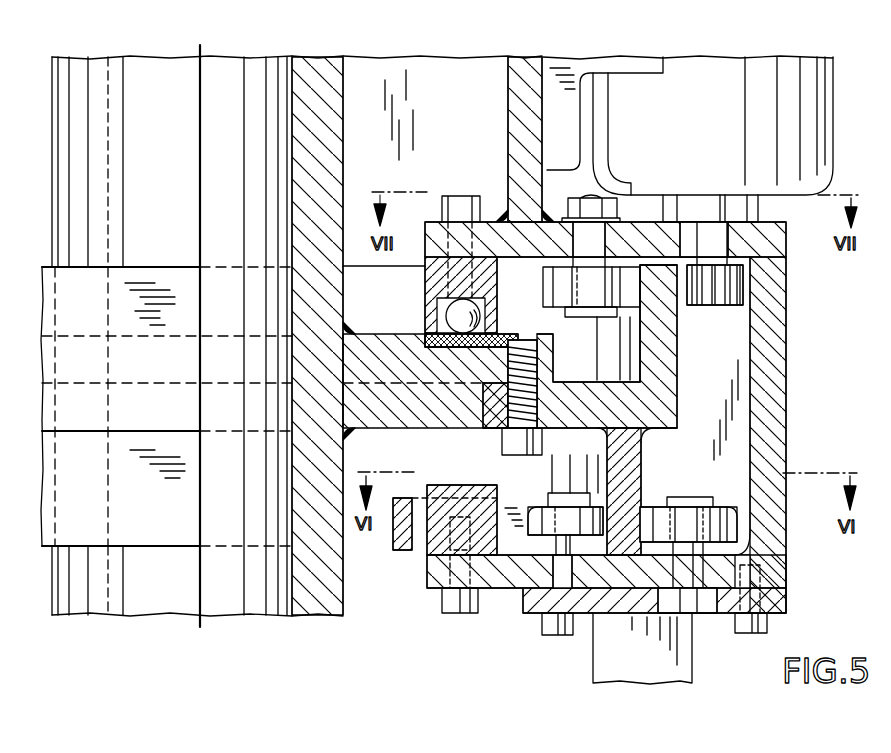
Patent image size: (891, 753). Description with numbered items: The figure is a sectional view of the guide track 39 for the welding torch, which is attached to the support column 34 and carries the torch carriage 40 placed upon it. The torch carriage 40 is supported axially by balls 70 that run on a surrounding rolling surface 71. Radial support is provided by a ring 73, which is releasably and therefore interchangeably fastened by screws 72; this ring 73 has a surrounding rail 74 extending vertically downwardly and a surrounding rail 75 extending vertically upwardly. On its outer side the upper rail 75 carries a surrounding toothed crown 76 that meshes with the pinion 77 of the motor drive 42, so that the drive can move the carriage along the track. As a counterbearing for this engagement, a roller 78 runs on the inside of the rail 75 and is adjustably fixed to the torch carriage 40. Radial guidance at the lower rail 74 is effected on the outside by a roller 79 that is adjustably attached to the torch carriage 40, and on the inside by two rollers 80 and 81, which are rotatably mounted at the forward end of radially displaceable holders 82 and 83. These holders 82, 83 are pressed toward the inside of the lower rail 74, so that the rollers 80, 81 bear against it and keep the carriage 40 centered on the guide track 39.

The support column 34 is at (294, 97).
The guide track 39 is at (370, 383).
The torch carriage 40 is at (768, 303).
The motor drive 42 is at (763, 75).
The balls 70 is at (450, 318).
The rolling surface 71 is at (503, 326).
The screws 72 is at (527, 418).
The ring 73 is at (620, 417).
The rail 74 is at (625, 522).
The rail 75 is at (652, 330).
The toothed crown 76 is at (678, 283).
The pinion 77 is at (733, 277).
The roller 78 is at (555, 293).
The roller 79 is at (720, 527).
The roller 80 is at (476, 567).
The roller 81 is at (527, 548).
The holder 82 is at (555, 505).
The holder 83 is at (525, 508).